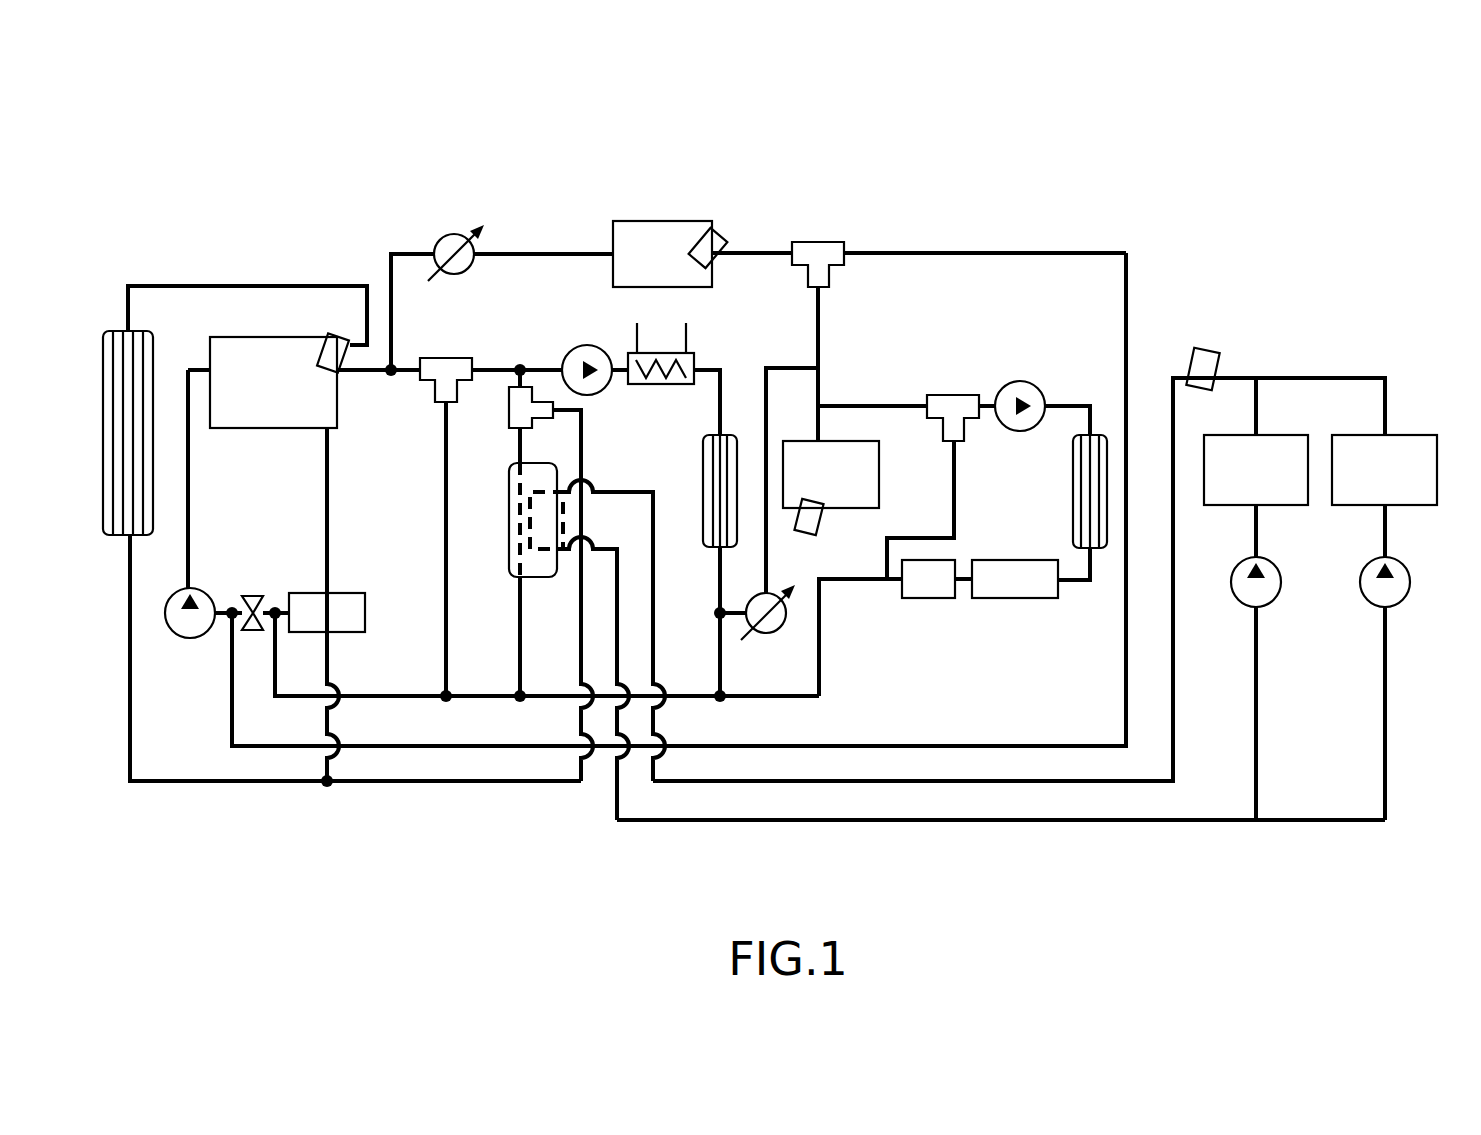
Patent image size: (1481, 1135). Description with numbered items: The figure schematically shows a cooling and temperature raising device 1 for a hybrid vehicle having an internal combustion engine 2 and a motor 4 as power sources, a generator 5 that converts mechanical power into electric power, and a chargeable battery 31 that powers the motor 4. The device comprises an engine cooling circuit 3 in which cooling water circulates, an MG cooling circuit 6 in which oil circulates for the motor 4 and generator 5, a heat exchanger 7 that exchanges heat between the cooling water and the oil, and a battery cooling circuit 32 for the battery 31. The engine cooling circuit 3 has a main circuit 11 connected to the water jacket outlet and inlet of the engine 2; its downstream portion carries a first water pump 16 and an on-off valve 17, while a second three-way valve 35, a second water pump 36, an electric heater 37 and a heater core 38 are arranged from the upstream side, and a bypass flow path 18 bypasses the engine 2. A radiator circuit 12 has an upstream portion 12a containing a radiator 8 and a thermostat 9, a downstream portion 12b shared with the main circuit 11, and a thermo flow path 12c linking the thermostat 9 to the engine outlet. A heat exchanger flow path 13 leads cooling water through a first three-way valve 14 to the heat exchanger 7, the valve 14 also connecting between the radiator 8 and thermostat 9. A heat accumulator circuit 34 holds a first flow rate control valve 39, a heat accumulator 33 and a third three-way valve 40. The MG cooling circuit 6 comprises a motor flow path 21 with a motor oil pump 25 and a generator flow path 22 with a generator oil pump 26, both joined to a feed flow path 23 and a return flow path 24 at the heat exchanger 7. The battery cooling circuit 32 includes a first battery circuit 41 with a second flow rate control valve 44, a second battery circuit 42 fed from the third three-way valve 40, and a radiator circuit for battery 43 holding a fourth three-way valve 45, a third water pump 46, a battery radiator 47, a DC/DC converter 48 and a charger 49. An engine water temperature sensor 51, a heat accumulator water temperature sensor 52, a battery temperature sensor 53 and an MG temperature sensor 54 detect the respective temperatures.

The cooling and temperature raising device 1 is at (818, 128).
The internal combustion engine 2 is at (240, 336).
The engine cooling circuit 3 is at (560, 226).
The motor 4 is at (1290, 434).
The generator 5 is at (1418, 434).
The MG cooling circuit 6 is at (1307, 334).
The heat exchanger 7 is at (508, 508).
The radiator 8 is at (118, 330).
The thermostat 9 is at (345, 592).
The main circuit 11 is at (720, 349).
The radiator circuit 12 is at (314, 253).
The upstream portion 12a is at (193, 284).
The downstream portion 12b is at (192, 506).
The thermo flow path 12c is at (325, 464).
The heat exchanger flow path 13 is at (520, 625).
The first three-way valve 14 is at (508, 425).
The first water pump 16 is at (185, 638).
The on-off valve 17 is at (258, 595).
The bypass flow path 18 is at (446, 625).
The motor flow path 21 is at (1260, 681).
The generator flow path 22 is at (1390, 679).
The feed flow path 23 is at (864, 784).
The return flow path 24 is at (737, 824).
The motor oil pump 25 is at (1283, 585).
The generator oil pump 26 is at (1412, 585).
The battery 31 is at (880, 475).
The battery cooling circuit 32 is at (886, 359).
The heat accumulator 33 is at (668, 220).
The heat accumulator circuit 34 is at (504, 252).
The second three-way valve 35 is at (452, 357).
The second water pump 36 is at (579, 346).
The electric heater 37 is at (660, 383).
The heater core 38 is at (704, 450).
The first flow rate control valve 39 is at (446, 233).
The third three-way valve 40 is at (822, 241).
The first battery circuit 41 is at (766, 366).
The second battery circuit 42 is at (820, 315).
The radiator circuit for battery 43 is at (1083, 403).
The second flow rate control valve 44 is at (790, 630).
The fourth three-way valve 45 is at (958, 394).
The third water pump 46 is at (1015, 432).
The battery radiator 47 is at (1100, 560).
The DC/DC converter 48 is at (1012, 599).
The charger 49 is at (928, 599).
The engine water temperature sensor 51 is at (324, 343).
The heat accumulator water temperature sensor 52 is at (728, 240).
The battery temperature sensor 53 is at (805, 532).
The MG temperature sensor 54 is at (1196, 350).